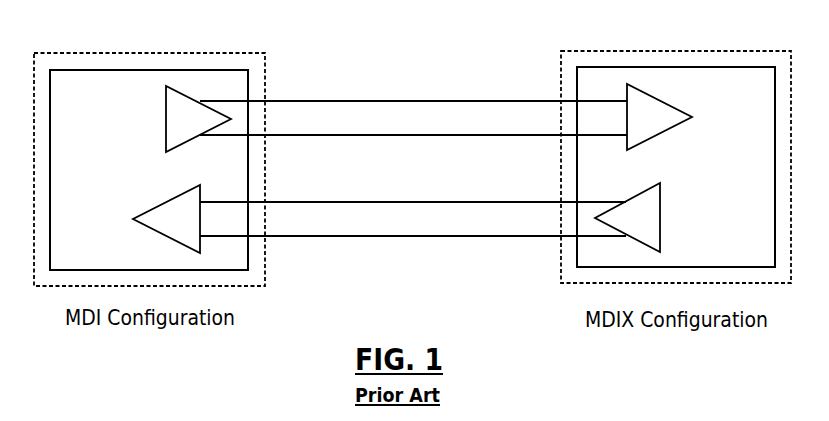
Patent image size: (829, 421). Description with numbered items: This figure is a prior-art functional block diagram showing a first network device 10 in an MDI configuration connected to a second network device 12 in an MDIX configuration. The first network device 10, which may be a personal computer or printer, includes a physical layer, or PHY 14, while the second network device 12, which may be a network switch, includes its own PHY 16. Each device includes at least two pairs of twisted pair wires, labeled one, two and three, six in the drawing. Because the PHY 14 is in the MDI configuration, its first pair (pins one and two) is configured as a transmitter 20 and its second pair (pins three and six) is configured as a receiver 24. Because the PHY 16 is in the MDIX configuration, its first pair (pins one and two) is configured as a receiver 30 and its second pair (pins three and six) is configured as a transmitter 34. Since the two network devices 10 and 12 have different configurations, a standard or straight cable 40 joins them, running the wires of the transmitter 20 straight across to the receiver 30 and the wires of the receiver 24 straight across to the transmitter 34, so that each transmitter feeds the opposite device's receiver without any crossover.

The first network device 10 is at (134, 52).
The second network device 12 is at (695, 50).
The physical layer (PHY) 14 is at (249, 83).
The physical layer (PHY) 16 is at (577, 92).
The transmitter 20 is at (166, 118).
The receiver 24 is at (150, 228).
The receiver 30 is at (662, 100).
The transmitter 34 is at (662, 216).
The straight cable 40 is at (406, 86).